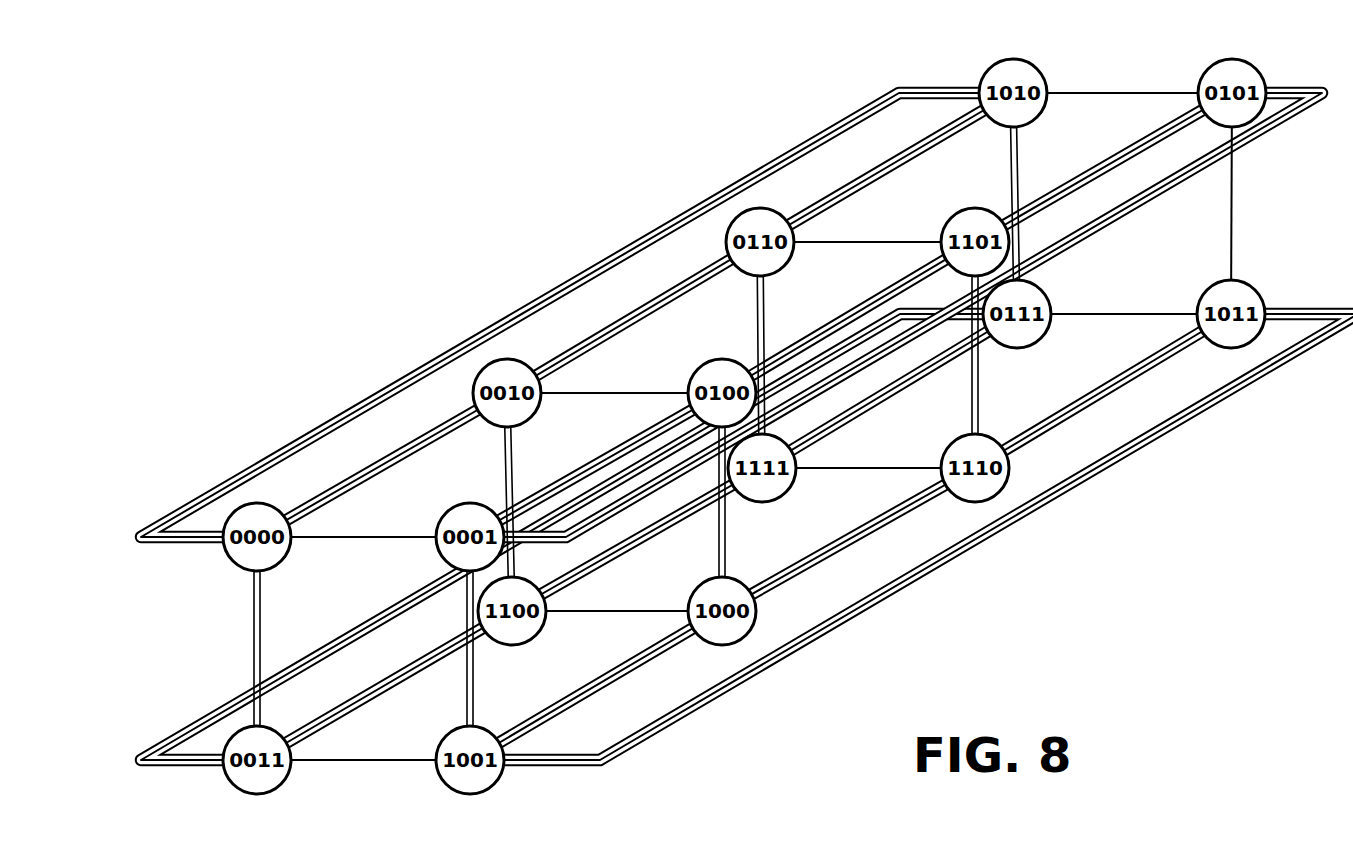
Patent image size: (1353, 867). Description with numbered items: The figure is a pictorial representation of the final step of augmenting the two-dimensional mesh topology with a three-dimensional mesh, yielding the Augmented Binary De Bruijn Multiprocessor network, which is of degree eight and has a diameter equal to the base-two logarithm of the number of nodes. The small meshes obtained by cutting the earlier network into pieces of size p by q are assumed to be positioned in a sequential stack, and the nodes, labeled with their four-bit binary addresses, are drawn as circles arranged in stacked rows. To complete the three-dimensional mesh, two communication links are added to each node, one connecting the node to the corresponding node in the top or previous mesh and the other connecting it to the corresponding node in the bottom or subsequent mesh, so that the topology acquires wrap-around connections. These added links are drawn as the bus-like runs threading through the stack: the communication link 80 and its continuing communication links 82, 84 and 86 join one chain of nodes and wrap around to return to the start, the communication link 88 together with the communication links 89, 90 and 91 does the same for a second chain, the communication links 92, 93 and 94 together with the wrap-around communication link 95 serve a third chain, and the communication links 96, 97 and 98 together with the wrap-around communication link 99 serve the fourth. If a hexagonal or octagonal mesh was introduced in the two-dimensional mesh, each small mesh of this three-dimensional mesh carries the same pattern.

The communication link 80 is at (373, 396).
The communication link 82 is at (393, 462).
The communication link 84 is at (632, 322).
The communication link 86 is at (883, 176).
The communication link 88 is at (305, 655).
The communication link 89 is at (377, 697).
The communication link 90 is at (607, 558).
The communication link 91 is at (873, 407).
The communication link 92 is at (640, 436).
The communication link 93 is at (840, 315).
The communication link 94 is at (1073, 187).
The communication link 95 is at (1113, 220).
The communication link 96 is at (640, 668).
The communication link 97 is at (810, 563).
The communication link 98 is at (1073, 412).
The communication link 99 is at (945, 560).